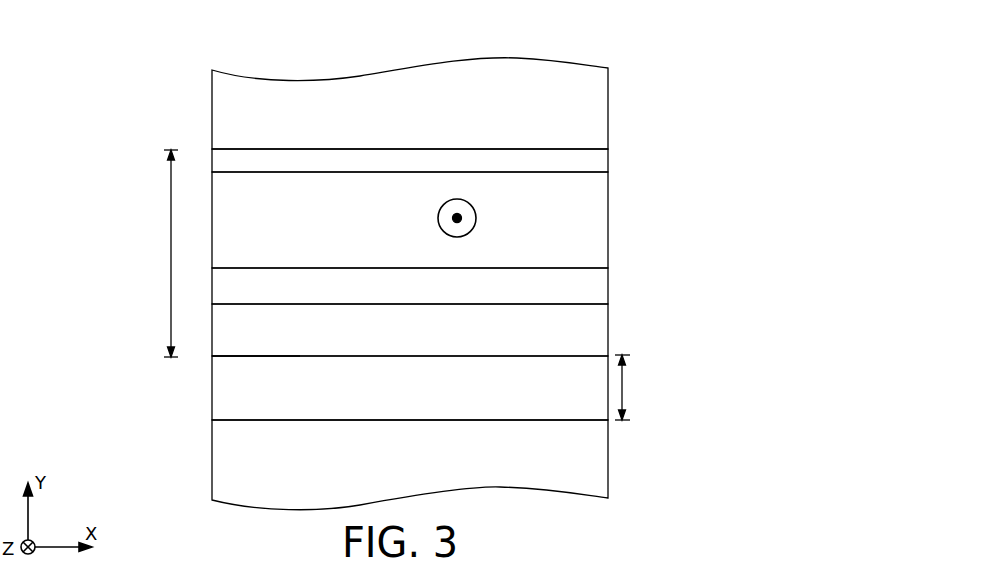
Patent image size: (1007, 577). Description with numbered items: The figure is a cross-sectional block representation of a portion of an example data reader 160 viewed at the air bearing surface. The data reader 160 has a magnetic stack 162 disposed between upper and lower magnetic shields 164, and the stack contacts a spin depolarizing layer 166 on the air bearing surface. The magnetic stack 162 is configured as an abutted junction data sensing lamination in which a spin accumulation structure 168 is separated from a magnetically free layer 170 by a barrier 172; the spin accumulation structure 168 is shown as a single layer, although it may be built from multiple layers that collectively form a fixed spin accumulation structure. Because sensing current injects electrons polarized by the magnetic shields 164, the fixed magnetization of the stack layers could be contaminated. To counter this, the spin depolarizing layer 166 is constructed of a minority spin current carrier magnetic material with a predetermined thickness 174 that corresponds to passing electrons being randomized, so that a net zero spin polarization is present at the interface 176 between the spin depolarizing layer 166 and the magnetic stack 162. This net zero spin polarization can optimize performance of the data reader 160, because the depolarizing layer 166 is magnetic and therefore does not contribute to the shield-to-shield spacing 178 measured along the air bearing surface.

The data reader 160 is at (620, 57).
The magnetic stack 162 is at (614, 175).
The magnetic shields 164 is at (602, 120).
The spin depolarizing layer 166 is at (602, 396).
The spin accumulation structure 168 is at (602, 340).
The magnetically free layer 170 is at (602, 230).
The barrier 172 is at (602, 294).
The predetermined thickness 174 is at (637, 387).
The interface 176 is at (208, 360).
The shield-to-shield spacing (SSS) 178 is at (168, 253).